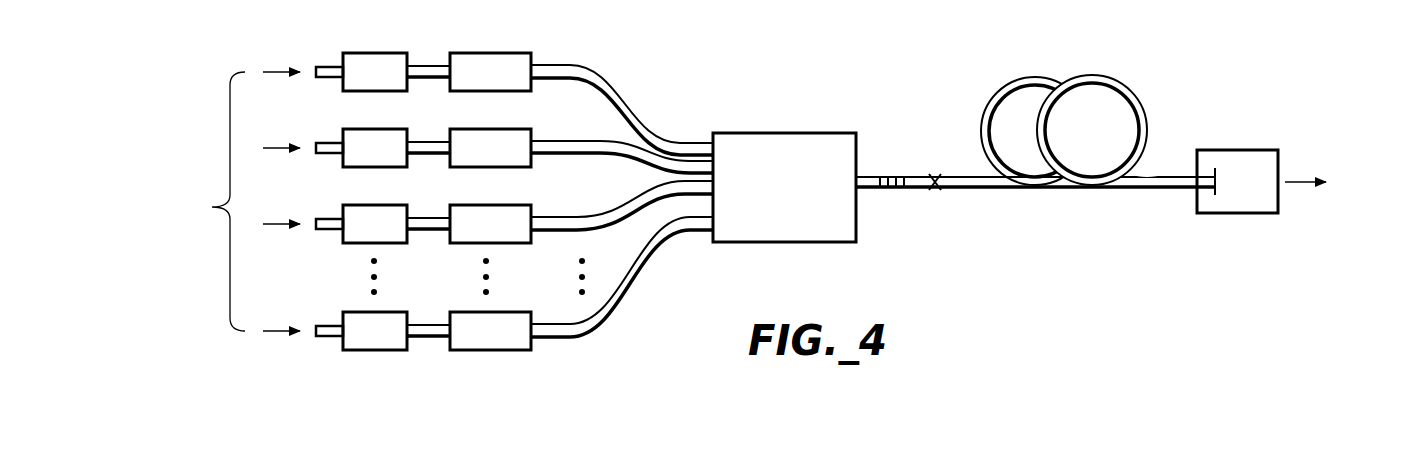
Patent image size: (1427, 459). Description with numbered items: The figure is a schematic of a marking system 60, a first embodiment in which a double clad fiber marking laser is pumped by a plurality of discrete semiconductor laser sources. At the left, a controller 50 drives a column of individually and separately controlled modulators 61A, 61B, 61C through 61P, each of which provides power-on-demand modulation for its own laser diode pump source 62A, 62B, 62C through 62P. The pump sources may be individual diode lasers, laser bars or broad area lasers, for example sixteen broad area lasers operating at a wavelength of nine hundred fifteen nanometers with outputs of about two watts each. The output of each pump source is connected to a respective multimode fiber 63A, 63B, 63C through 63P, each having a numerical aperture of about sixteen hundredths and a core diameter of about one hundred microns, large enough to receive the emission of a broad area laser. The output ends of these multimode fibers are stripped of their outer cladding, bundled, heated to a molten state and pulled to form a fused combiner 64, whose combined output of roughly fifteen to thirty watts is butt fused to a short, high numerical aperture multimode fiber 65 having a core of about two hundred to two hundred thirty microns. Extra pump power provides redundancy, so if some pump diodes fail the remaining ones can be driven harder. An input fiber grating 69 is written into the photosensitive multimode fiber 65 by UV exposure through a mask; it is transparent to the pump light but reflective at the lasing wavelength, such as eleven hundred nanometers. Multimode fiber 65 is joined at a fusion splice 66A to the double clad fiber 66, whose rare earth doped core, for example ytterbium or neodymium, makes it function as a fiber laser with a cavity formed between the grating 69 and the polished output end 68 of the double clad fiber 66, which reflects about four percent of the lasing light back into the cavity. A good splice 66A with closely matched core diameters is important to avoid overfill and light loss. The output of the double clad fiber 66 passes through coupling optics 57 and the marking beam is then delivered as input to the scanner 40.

The scanner 40 is at (1345, 158).
The controller 50 is at (149, 201).
The coupling optics 57 is at (1240, 150).
The marking system 60 is at (921, 79).
The modulator 61A is at (360, 53).
The modulator 61B is at (360, 129).
The modulator 61C is at (360, 205).
The modulator 61P is at (360, 350).
The laser diode pump source 62A is at (485, 53).
The laser diode pump source 62B is at (485, 129).
The laser diode pump source 62C is at (485, 205).
The laser diode pump source 62P is at (485, 350).
The multimode fiber 63A is at (610, 80).
The multimode fiber 63B is at (552, 140).
The multimode fiber 63C is at (567, 231).
The multimode fiber 63P is at (607, 317).
The fused combiner 64 is at (793, 133).
The multimode fiber 65 is at (871, 175).
The double clad fiber 66 is at (1117, 83).
The splice 66A is at (933, 192).
The polished output end 68 is at (1217, 172).
The input fiber grating 69 is at (893, 177).